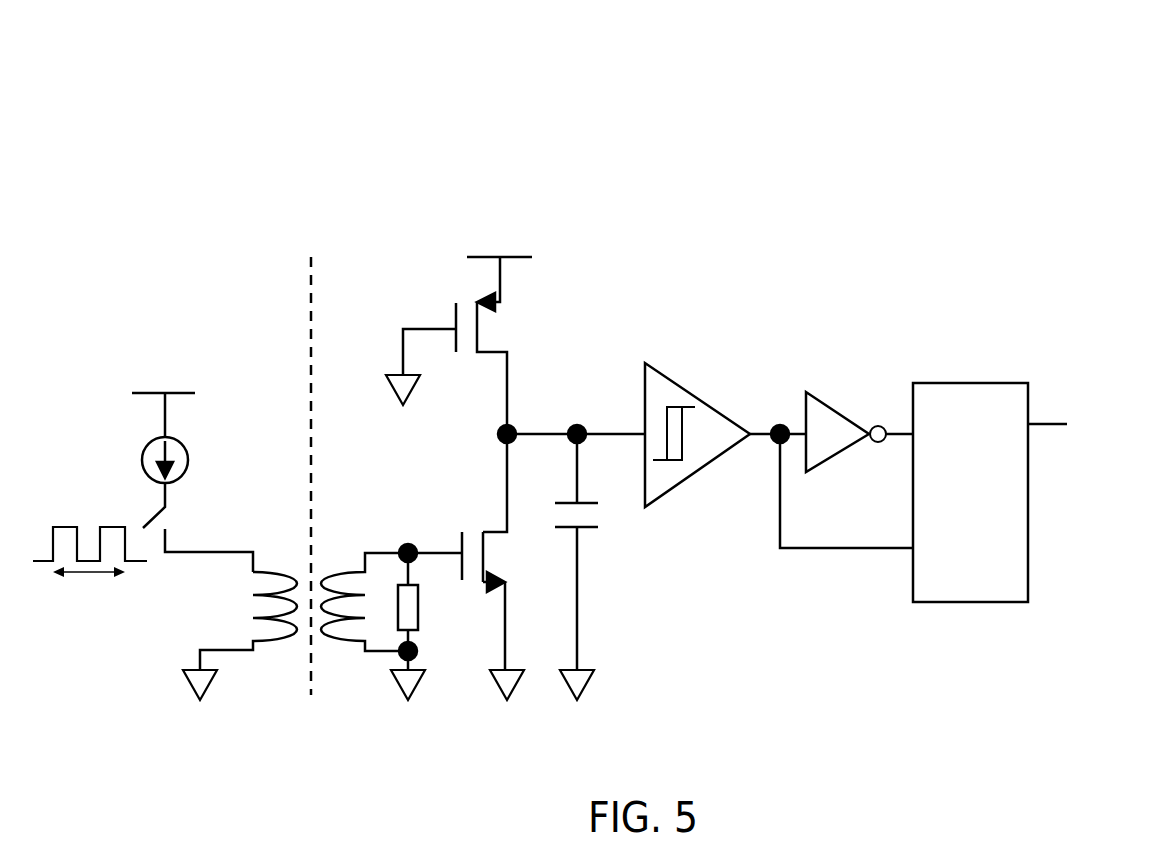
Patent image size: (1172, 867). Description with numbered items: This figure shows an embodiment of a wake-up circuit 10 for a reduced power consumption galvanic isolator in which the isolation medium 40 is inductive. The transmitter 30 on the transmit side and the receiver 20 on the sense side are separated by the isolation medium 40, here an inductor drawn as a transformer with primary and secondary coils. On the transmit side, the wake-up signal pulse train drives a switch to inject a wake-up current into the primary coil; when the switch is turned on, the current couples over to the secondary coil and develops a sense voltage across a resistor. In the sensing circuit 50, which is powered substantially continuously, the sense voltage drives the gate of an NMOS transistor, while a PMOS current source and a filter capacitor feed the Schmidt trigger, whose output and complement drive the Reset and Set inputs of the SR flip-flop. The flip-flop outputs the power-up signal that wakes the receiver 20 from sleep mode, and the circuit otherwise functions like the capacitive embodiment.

The wake-up / power-up detection system 10 is at (1009, 165).
The receiver 20 is at (736, 622).
The transmitter 30 is at (221, 249).
The isolation medium 40 is at (311, 250).
The sensing circuit 50 is at (408, 214).